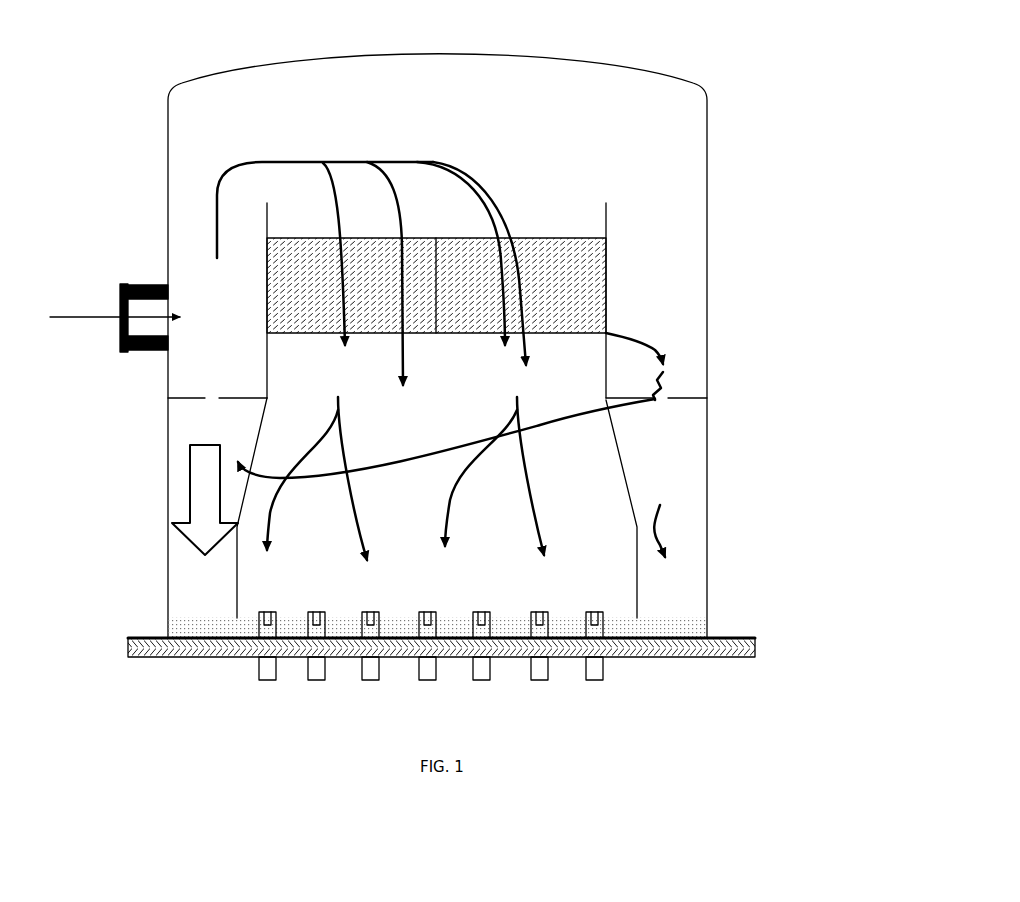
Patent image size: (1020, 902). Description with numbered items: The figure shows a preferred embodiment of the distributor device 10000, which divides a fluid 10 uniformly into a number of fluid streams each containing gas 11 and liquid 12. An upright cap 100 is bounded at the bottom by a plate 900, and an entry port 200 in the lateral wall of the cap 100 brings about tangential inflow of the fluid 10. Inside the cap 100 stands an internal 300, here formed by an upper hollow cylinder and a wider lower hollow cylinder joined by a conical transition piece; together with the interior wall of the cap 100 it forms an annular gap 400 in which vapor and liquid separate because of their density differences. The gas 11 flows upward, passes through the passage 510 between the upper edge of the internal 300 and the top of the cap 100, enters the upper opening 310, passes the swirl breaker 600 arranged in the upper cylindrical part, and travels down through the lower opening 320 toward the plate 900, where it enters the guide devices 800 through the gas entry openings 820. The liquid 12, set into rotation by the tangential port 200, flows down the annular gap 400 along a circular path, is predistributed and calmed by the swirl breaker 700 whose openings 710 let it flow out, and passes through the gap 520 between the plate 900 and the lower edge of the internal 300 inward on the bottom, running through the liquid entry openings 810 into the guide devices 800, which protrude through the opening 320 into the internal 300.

The distributor device 10000 is at (162, 87).
The cap 100 is at (168, 143).
The entry port 200 is at (128, 284).
The fluid 10 is at (72, 303).
The gas 11 is at (218, 183).
The liquid 12 is at (267, 283).
The internal 300 is at (607, 218).
The upper opening 310 is at (525, 220).
The passage for gas 510 is at (262, 136).
The swirl breaker for gas 600 is at (580, 278).
The annular gap 400 is at (667, 273).
The swirl breaker for liquid 700 is at (186, 400).
The openings 710 is at (212, 398).
The lower opening 320 is at (513, 603).
The passage for liquid 520 is at (235, 630).
The gas entry openings 820 is at (597, 606).
The plate 900 is at (730, 637).
The liquid entry openings 810 is at (643, 655).
The guide devices 800 is at (497, 642).